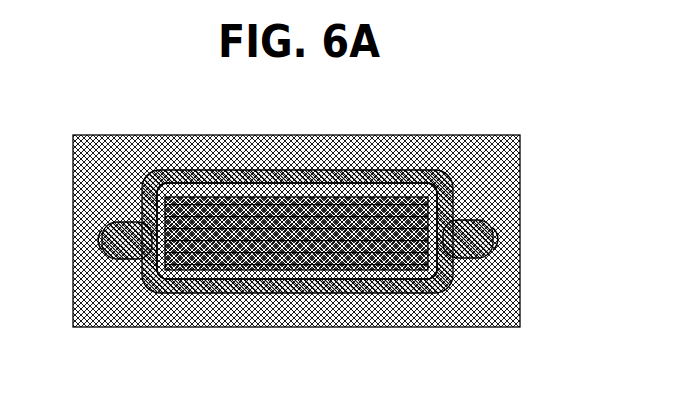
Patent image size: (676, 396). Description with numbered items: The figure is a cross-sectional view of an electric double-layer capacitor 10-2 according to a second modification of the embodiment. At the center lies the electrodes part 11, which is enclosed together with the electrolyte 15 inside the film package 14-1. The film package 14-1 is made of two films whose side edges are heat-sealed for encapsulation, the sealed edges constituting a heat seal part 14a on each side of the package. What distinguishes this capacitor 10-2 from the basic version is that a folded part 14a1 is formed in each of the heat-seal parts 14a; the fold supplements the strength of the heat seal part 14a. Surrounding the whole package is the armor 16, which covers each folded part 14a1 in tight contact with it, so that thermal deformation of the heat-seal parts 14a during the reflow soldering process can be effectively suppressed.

The electric double-layer capacitor 10-2 is at (281, 229).
The electrodes part 11 is at (237, 196).
The film package 14-1 is at (325, 170).
The heat seal part 14a is at (128, 222).
The folded part 14a1 is at (121, 260).
The electrolyte 15 is at (435, 194).
The armor 16 is at (160, 140).